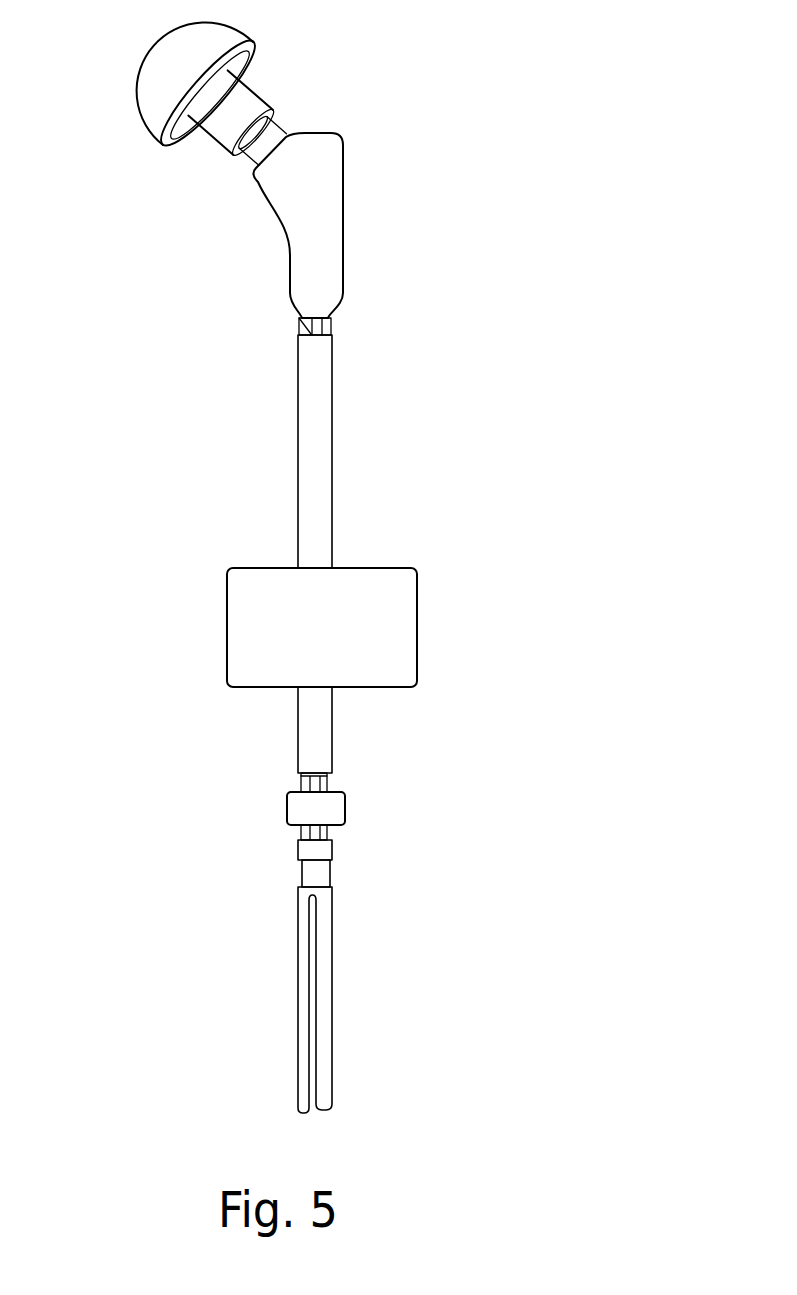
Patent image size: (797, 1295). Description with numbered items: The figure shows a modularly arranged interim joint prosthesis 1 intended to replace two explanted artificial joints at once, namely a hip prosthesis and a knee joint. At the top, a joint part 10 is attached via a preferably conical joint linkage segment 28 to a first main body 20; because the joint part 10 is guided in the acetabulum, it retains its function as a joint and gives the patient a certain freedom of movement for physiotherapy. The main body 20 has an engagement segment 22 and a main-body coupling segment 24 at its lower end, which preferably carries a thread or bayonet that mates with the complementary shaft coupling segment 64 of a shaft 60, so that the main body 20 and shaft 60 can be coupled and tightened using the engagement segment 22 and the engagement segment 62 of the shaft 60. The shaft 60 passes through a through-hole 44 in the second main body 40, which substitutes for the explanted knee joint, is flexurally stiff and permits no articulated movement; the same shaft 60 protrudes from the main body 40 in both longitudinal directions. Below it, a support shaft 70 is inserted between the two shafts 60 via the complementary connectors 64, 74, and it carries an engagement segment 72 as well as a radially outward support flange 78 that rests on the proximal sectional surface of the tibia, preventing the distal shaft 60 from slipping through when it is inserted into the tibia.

The interim joint prosthesis 1 is at (421, 67).
The joint part 10 is at (157, 67).
The joint linkage segment 28 is at (270, 132).
The main body 20 is at (374, 204).
The engagement segment 22 is at (300, 322).
The main-body coupling segment 24 is at (330, 320).
The shaft 60 is at (317, 724).
The shaft coupling segment 64 is at (313, 377).
The engagement segment 62 is at (317, 732).
The main body 40 is at (435, 611).
The hole 44 is at (347, 557).
The support shaft 70 is at (328, 809).
The complementary connector 74 is at (325, 788).
The support flange 78 is at (292, 812).
The engagement segment 72 is at (323, 840).